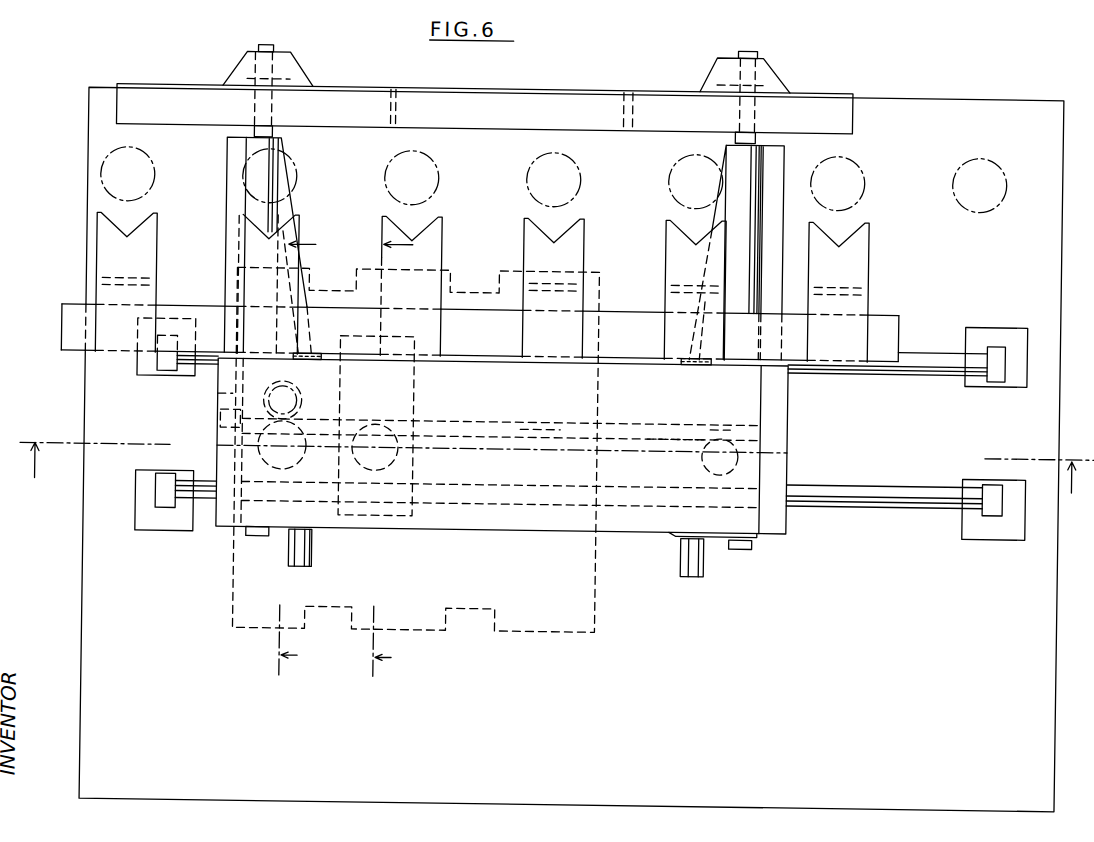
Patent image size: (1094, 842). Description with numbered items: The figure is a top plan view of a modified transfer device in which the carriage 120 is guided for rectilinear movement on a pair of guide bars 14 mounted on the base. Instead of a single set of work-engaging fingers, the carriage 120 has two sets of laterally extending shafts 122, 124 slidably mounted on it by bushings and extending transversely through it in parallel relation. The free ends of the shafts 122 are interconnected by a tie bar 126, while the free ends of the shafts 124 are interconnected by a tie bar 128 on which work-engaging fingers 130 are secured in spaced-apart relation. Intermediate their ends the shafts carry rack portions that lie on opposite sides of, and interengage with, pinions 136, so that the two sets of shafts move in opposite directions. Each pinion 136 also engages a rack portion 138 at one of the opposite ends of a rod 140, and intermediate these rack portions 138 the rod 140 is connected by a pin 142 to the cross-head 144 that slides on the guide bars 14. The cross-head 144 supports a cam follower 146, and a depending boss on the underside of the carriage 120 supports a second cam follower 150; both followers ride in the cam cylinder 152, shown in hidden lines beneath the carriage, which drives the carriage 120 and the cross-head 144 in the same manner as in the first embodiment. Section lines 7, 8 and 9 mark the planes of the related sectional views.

The section line 7- 7 is at (554, 470).
The section line 8- 8 is at (306, 455).
The section line 9- 9 is at (400, 456).
The guide bars 14 is at (924, 355).
The carriage 120 is at (799, 477).
The shafts 122 is at (268, 136).
The shafts 124 is at (311, 357).
The tie bar 126 is at (520, 103).
The tie bar 128 is at (888, 334).
The work-engaging fingers 130 is at (857, 265).
The pinions 136 is at (301, 405).
The rack portions 138 is at (222, 405).
The rod 140 is at (531, 426).
The pin 142 is at (297, 402).
The cross-head 144 is at (412, 399).
The cam follower 146 is at (415, 467).
The cam follower 150 is at (227, 465).
The cam cylinder 152 is at (534, 605).